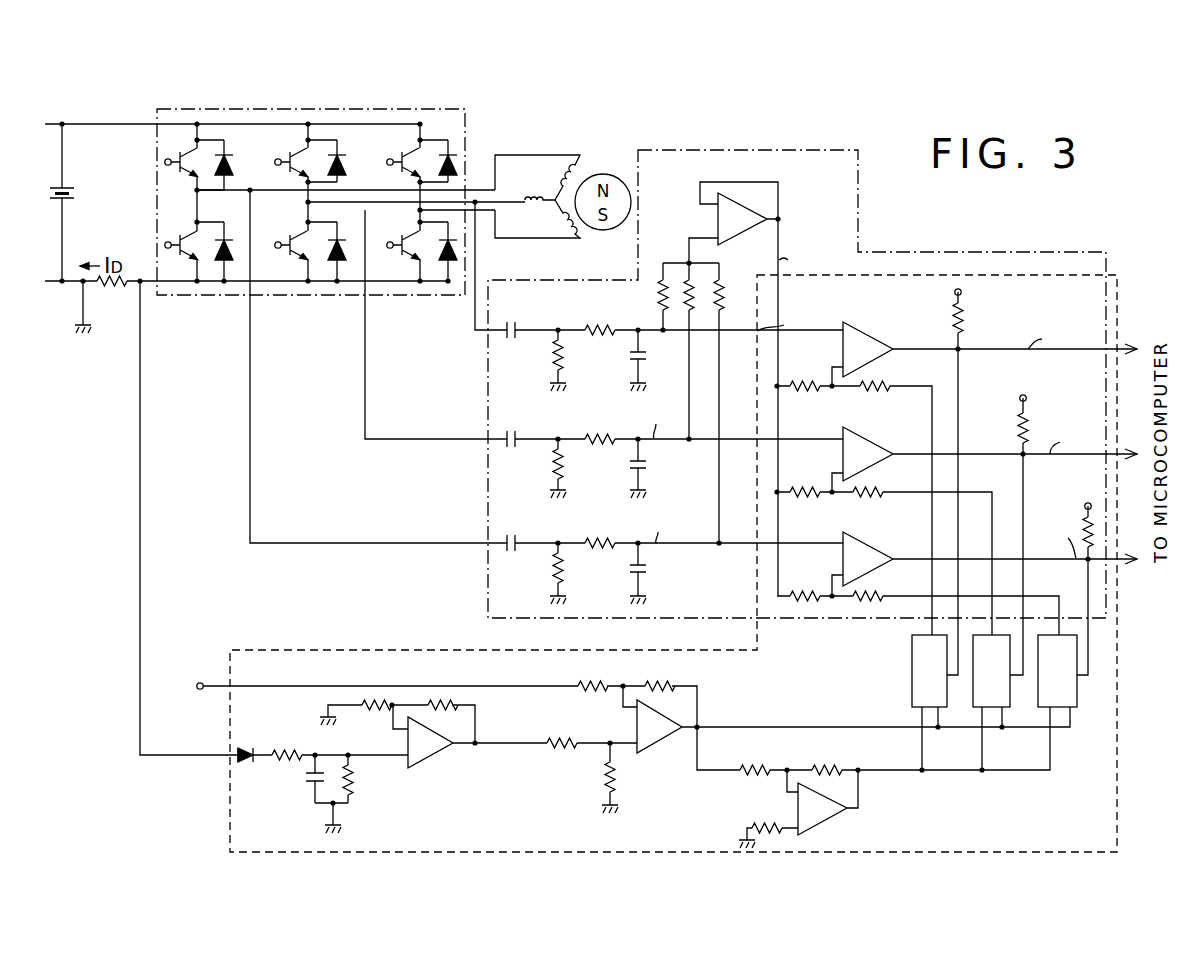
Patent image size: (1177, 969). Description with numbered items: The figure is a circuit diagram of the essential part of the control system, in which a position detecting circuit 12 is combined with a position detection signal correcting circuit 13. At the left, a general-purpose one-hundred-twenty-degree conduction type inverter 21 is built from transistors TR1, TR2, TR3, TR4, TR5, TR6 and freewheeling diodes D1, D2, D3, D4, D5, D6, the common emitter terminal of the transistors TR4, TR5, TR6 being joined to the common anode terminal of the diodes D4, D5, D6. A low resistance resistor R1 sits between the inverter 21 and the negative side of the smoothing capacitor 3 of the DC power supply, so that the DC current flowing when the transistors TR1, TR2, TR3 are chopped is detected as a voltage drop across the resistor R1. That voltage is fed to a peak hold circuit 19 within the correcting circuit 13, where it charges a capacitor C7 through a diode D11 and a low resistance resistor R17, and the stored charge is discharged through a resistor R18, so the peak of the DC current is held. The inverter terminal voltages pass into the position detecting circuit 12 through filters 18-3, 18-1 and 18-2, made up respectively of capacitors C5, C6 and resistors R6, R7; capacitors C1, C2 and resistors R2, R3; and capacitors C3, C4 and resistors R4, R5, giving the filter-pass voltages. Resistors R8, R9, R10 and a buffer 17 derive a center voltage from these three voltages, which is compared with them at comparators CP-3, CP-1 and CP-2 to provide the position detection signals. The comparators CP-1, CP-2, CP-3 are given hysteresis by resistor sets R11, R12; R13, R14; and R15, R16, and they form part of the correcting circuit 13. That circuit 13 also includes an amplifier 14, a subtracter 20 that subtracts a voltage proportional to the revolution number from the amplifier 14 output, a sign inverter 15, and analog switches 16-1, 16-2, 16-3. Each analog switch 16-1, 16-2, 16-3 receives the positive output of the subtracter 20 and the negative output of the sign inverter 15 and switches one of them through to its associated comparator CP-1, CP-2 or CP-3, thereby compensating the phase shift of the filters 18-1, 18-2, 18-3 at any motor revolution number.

The smoothing capacitor 3 is at (52, 196).
The position detecting circuit 12 is at (858, 229).
The position detection signal correcting circuit 13 is at (262, 650).
The amplifier 14 is at (425, 759).
The sign inverter 15 is at (822, 821).
The analog switch 16-1 is at (912, 657).
The analog switch 16-2 is at (975, 707).
The analog switch 16-3 is at (1080, 708).
The buffer 17 is at (784, 215).
The filter 18-1 is at (671, 340).
The filter 18-2 is at (670, 453).
The filter 18-3 is at (670, 558).
The peak hold circuit 19 is at (350, 800).
The subtracter 20 is at (670, 738).
The inverter 21 is at (470, 110).
The transistor TR1 is at (165, 161).
The transistor TR2 is at (283, 140).
The transistor TR3 is at (397, 140).
The transistor TR4 is at (166, 242).
The transistor TR5 is at (276, 252).
The transistor TR6 is at (389, 252).
The freewheeling diode D1 is at (215, 177).
The freewheeling diode D2 is at (341, 164).
The freewheeling diode D3 is at (458, 162).
The freewheeling diode D4 is at (243, 216).
The freewheeling diode D5 is at (340, 263).
The freewheeling diode D6 is at (454, 267).
The diode D11 is at (239, 750).
The low resistance resistor R1 is at (111, 298).
The resistor R2 is at (552, 373).
The resistor R3 is at (600, 347).
The resistor R4 is at (552, 480).
The resistor R5 is at (600, 457).
The resistor R6 is at (550, 583).
The resistor R7 is at (599, 560).
The resistor R8 is at (657, 294).
The resistor R9 is at (686, 285).
The resistor R10 is at (724, 290).
The resistor R11 is at (808, 372).
The resistor R12 is at (875, 386).
The resistor R13 is at (808, 478).
The resistor R14 is at (867, 492).
The resistor R15 is at (810, 582).
The resistor R16 is at (867, 597).
The low resistance resistor R17 is at (337, 741).
The resistor R18 is at (371, 781).
The capacitor C1 is at (513, 356).
The capacitor C2 is at (653, 360).
The capacitor C3 is at (511, 467).
The capacitor C4 is at (654, 468).
The capacitor C5 is at (511, 570).
The capacitor C6 is at (654, 573).
The capacitor C7 is at (309, 781).
The comparator CP-1 is at (990, 339).
The comparator CP-2 is at (990, 444).
The comparator CP-3 is at (990, 554).